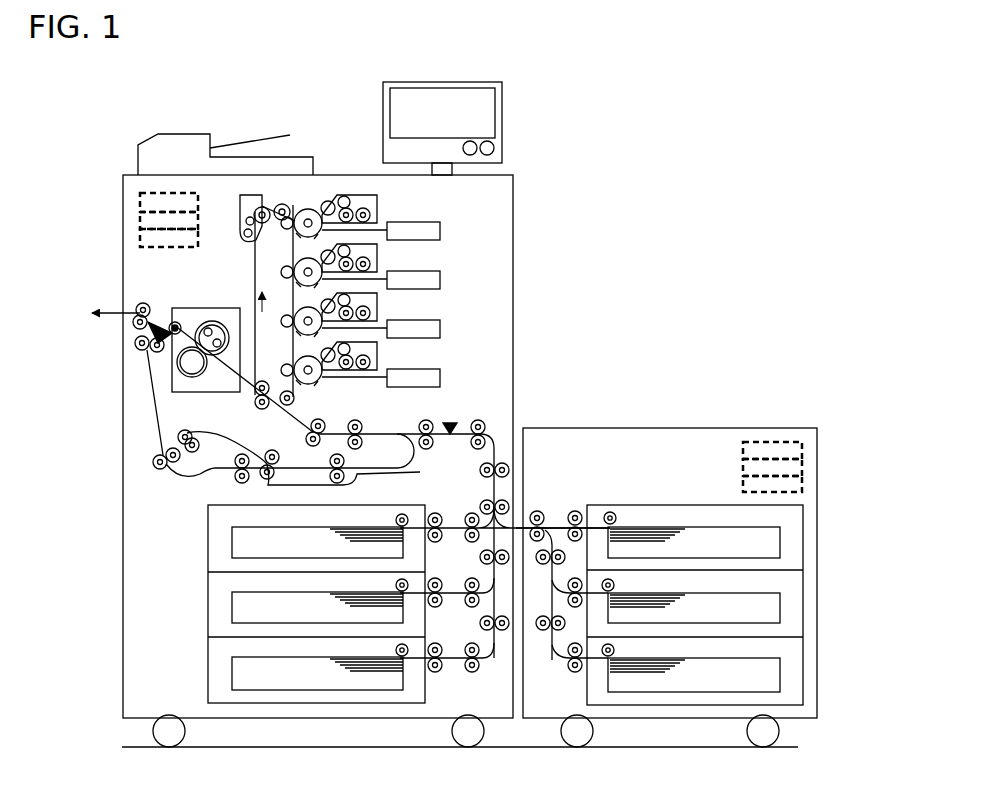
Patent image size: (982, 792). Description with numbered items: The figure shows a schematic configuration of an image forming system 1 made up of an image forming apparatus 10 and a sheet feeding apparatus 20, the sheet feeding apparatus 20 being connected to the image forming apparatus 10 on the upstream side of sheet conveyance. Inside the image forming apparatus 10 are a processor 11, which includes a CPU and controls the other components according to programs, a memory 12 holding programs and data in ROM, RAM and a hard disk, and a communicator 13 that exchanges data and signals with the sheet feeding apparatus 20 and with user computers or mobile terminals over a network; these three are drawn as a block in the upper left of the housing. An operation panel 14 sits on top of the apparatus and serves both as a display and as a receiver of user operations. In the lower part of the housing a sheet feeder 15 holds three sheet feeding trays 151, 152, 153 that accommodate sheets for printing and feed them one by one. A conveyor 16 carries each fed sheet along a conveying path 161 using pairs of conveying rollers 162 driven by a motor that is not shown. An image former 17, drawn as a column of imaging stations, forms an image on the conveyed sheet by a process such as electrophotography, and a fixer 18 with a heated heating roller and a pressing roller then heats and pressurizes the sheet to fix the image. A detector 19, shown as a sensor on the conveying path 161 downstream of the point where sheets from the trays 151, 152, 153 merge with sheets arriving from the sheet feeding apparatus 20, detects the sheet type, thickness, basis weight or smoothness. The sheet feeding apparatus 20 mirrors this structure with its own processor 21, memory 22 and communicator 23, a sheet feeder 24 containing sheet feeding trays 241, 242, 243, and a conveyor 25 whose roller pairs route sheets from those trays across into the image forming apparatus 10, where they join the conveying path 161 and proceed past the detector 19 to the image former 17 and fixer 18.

The image forming system 1 is at (140, 107).
The image forming apparatus 10 is at (514, 300).
The processor 11 is at (140, 200).
The memory 12 is at (140, 218).
The communicator 13 is at (140, 240).
The operation panel 14 is at (502, 120).
The sheet feeder 15 is at (198, 506).
The sheet feeding tray 151 is at (208, 540).
The sheet feeding tray 152 is at (208, 605).
The sheet feeding tray 153 is at (208, 670).
The conveyor 16 is at (478, 464).
The conveying path 161 is at (495, 440).
The pair of conveying rollers 162 is at (365, 420).
The image former 17 is at (456, 222).
The fixer 18 is at (207, 307).
The detector 19 is at (455, 422).
The sheet feeding apparatus 20 is at (673, 428).
The processor 21 is at (802, 446).
The memory 22 is at (802, 470).
The communicator 23 is at (802, 490).
The sheet feeder 24 is at (694, 496).
The sheet feeding tray 241 is at (817, 538).
The sheet feeding tray 242 is at (817, 603).
The sheet feeding tray 243 is at (817, 668).
The conveyor 25 is at (553, 496).